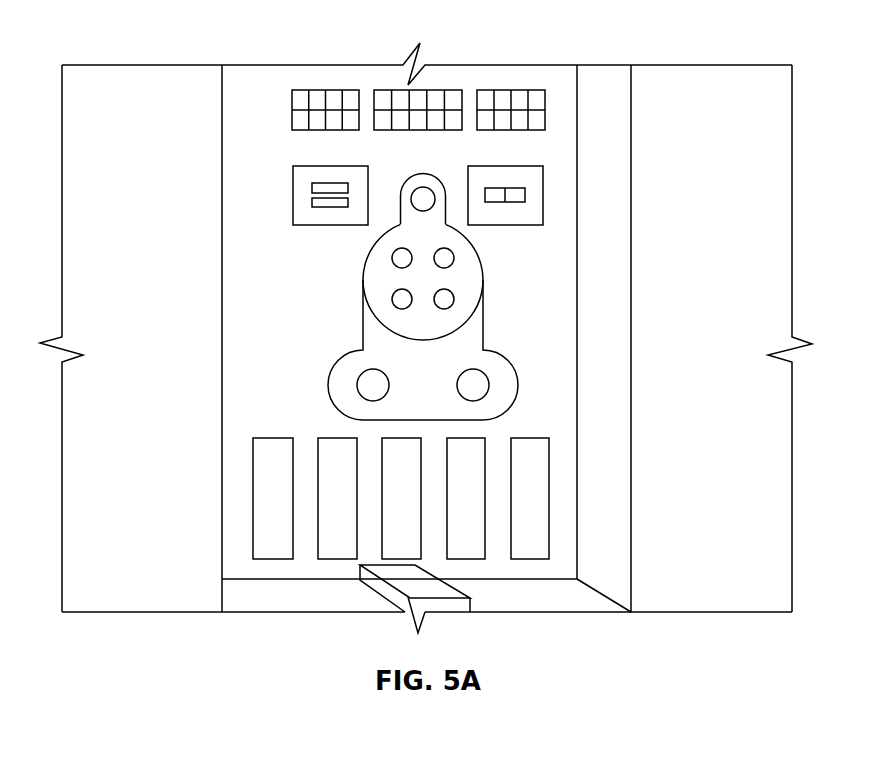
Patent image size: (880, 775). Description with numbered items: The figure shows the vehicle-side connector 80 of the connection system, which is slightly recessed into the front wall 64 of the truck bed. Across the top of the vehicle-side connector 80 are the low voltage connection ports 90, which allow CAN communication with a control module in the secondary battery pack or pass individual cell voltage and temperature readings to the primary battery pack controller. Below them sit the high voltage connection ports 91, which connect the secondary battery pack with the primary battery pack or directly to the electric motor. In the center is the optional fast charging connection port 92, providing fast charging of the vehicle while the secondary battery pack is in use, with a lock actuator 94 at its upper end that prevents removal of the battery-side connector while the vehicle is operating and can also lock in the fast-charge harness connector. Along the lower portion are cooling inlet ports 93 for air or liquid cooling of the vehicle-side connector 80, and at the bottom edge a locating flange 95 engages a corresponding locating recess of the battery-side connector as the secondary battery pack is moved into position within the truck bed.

The front wall 64 is at (708, 83).
The vehicle-side connector 80 is at (503, 36).
The low voltage connection ports 90 is at (276, 118).
The high voltage connection ports 91 is at (276, 193).
The fast charging connection port 92 is at (495, 292).
The cooling inlet ports 93 is at (245, 506).
The lock actuator 94 is at (434, 163).
The locating flange 95 is at (447, 608).